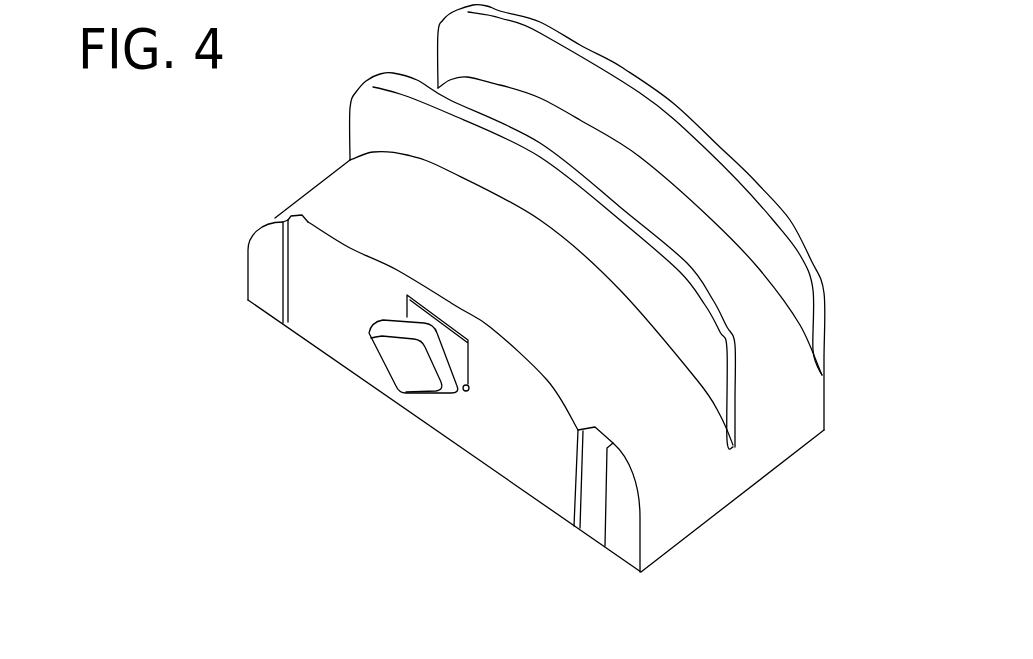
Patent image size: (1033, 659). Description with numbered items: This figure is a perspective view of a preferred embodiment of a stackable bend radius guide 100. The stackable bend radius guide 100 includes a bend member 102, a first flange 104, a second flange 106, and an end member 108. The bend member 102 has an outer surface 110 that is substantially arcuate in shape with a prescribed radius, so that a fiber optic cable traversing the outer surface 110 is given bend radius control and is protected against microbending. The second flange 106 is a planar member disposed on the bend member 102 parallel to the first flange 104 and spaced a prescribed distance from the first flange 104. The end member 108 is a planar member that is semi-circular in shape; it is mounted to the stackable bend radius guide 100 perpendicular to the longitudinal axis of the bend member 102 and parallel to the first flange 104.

The stackable bend radius guide 100 is at (172, 372).
The bend member 102 is at (692, 494).
The first flange 104 is at (623, 68).
The second flange 106 is at (735, 347).
The end member 108 is at (510, 449).
The outer surface 110 is at (330, 200).